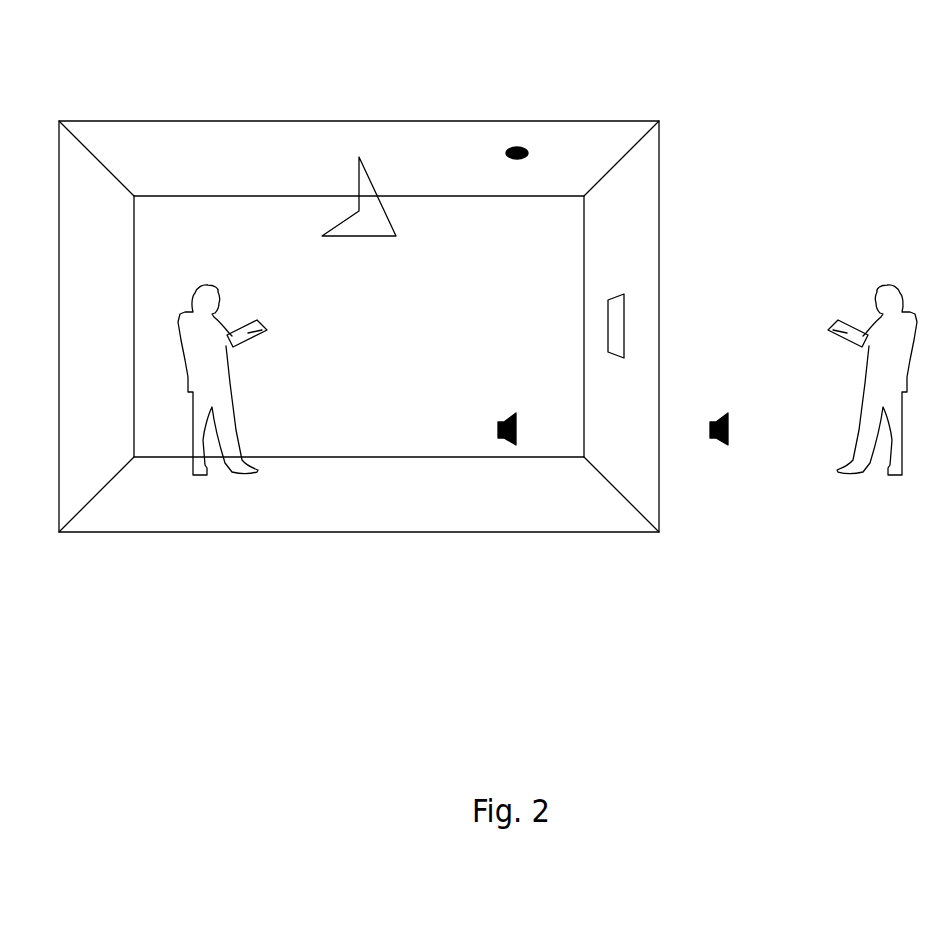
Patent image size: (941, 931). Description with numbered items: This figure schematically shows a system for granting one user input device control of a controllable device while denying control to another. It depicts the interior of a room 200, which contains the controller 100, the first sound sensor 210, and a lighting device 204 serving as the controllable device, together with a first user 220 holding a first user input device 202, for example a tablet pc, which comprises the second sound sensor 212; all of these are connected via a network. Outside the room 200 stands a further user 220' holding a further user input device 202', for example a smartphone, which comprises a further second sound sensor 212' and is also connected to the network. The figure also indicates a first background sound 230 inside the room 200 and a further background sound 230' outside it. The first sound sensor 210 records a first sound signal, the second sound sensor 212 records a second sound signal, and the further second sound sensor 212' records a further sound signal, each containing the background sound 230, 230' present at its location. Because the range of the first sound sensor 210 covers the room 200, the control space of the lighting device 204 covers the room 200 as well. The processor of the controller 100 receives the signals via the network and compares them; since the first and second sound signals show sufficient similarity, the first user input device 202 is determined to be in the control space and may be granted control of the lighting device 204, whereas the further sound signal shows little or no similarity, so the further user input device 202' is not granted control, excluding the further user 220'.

The room 200 is at (205, 223).
The lighting device 204 is at (377, 223).
The first sound sensor 210 is at (517, 147).
The controller 100 is at (617, 325).
The first user 220 is at (211, 458).
The first user input device 202 is at (310, 331).
The second sound sensor 212 is at (320, 353).
The first sound 230 is at (494, 522).
The further user 220' is at (877, 458).
The further user input device 202' is at (784, 331).
The further second sound sensor 212' is at (773, 353).
The further sound 230' is at (709, 522).